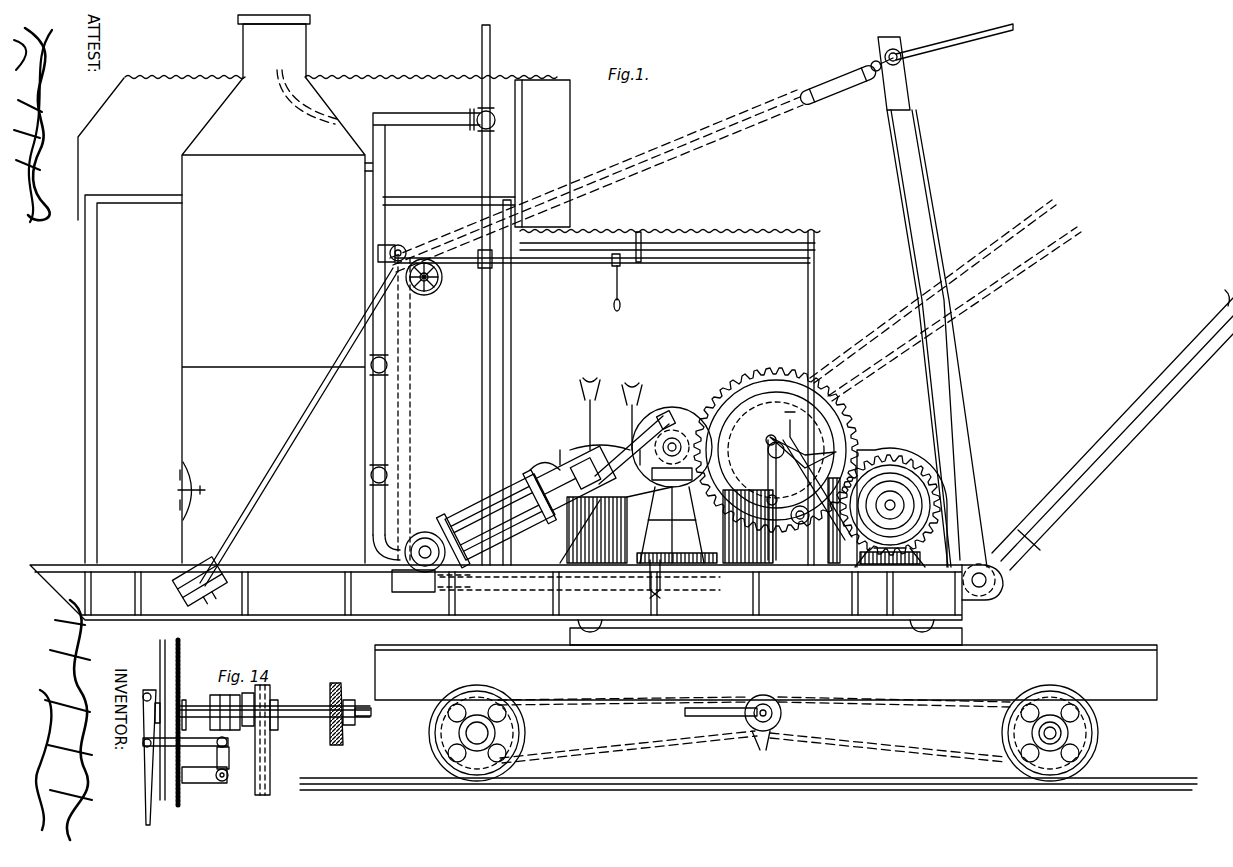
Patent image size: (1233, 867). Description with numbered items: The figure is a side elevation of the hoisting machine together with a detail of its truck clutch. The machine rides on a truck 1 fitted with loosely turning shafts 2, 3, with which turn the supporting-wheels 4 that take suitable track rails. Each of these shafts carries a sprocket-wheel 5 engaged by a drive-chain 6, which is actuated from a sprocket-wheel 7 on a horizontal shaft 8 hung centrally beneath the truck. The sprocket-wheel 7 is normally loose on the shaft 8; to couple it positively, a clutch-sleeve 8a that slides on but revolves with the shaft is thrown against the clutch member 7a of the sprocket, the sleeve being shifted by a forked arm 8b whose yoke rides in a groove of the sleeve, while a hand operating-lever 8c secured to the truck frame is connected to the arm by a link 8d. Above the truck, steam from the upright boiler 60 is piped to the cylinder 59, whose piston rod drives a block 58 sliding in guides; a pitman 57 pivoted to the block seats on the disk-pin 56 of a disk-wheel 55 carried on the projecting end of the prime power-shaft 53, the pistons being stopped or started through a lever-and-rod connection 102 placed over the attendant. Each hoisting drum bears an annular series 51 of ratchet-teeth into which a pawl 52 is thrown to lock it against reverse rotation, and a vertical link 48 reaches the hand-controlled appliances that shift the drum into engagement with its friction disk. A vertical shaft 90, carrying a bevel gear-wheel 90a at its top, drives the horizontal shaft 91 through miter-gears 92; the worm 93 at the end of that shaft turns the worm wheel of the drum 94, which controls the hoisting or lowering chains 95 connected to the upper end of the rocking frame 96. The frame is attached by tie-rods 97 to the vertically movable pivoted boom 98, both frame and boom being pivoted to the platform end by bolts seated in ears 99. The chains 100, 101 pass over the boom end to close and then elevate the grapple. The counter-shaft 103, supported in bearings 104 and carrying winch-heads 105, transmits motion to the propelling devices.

In FIG. 1, the truck 1 is at (766, 664).
In FIG. 1, the shaft 2 is at (470, 733).
In FIG. 1, the shaft 3 is at (1058, 734).
In FIG. 1, the supporting-wheels 4 is at (1092, 758).
In FIG. 1, the sprocket-wheel 5 is at (1010, 724).
In FIG. 1, the drive-chain 6 is at (878, 748).
In FIG. 1, the sprocket-wheel 7 is at (772, 730).
In FIG. 14, the sprocket-wheel 7 is at (250, 728).
In FIG. 1, the horizontal shaft 8 is at (757, 735).
In FIG. 14, the horizontal shaft 8 is at (298, 716).
In FIG. 14, the clutch member 7a is at (264, 670).
In FIG. 14, the clutch-sleeve 8a is at (212, 697).
In FIG. 14, the forked arm 8b is at (226, 756).
In FIG. 14, the hand operating-lever 8c is at (145, 800).
In FIG. 14, the link 8d is at (205, 793).
In FIG. 1, the vertical link 48 is at (809, 486).
In FIG. 1, the annular series of ratchet-teeth 51 is at (822, 427).
In FIG. 1, the pawl 52 is at (750, 380).
In FIG. 1, the prime power-shaft 53 is at (674, 420).
In FIG. 1, the disk-wheels 55 is at (674, 485).
In FIG. 1, the disk-pin 56 is at (648, 410).
In FIG. 1, the pitman 57 is at (600, 398).
In FIG. 1, the block 58 is at (558, 474).
In FIG. 1, the cylinder 59 is at (497, 518).
In FIG. 1, the upright boiler 60 is at (273, 289).
In FIG. 1, the vertical shaft 90 is at (640, 540).
In FIG. 1, the bevel gear-wheel 90a is at (685, 469).
In FIG. 1, the horizontal shaft 91 is at (585, 583).
In FIG. 1, the miter-gears 92 is at (664, 585).
In FIG. 1, the worm 93 is at (412, 588).
In FIG. 1, the drum 94 is at (425, 532).
In FIG. 1, the hoisting or lowering chains 95 is at (697, 128).
In FIG. 1, the rocking frame 96 is at (950, 382).
In FIG. 1, the tie-rods 97 is at (955, 42).
In FIG. 1, the boom 98 is at (1112, 430).
In FIG. 1, the ears 99 is at (976, 600).
In FIG. 1, the chain 100 is at (992, 240).
In FIG. 1, the chain 101 is at (1018, 258).
In FIG. 1, the lever-and-rod connection 102 is at (620, 266).
In FIG. 1, the counter-shaft 103 is at (905, 500).
In FIG. 1, the bearings 104 is at (920, 548).
In FIG. 1, the winch-heads 105 is at (893, 500).